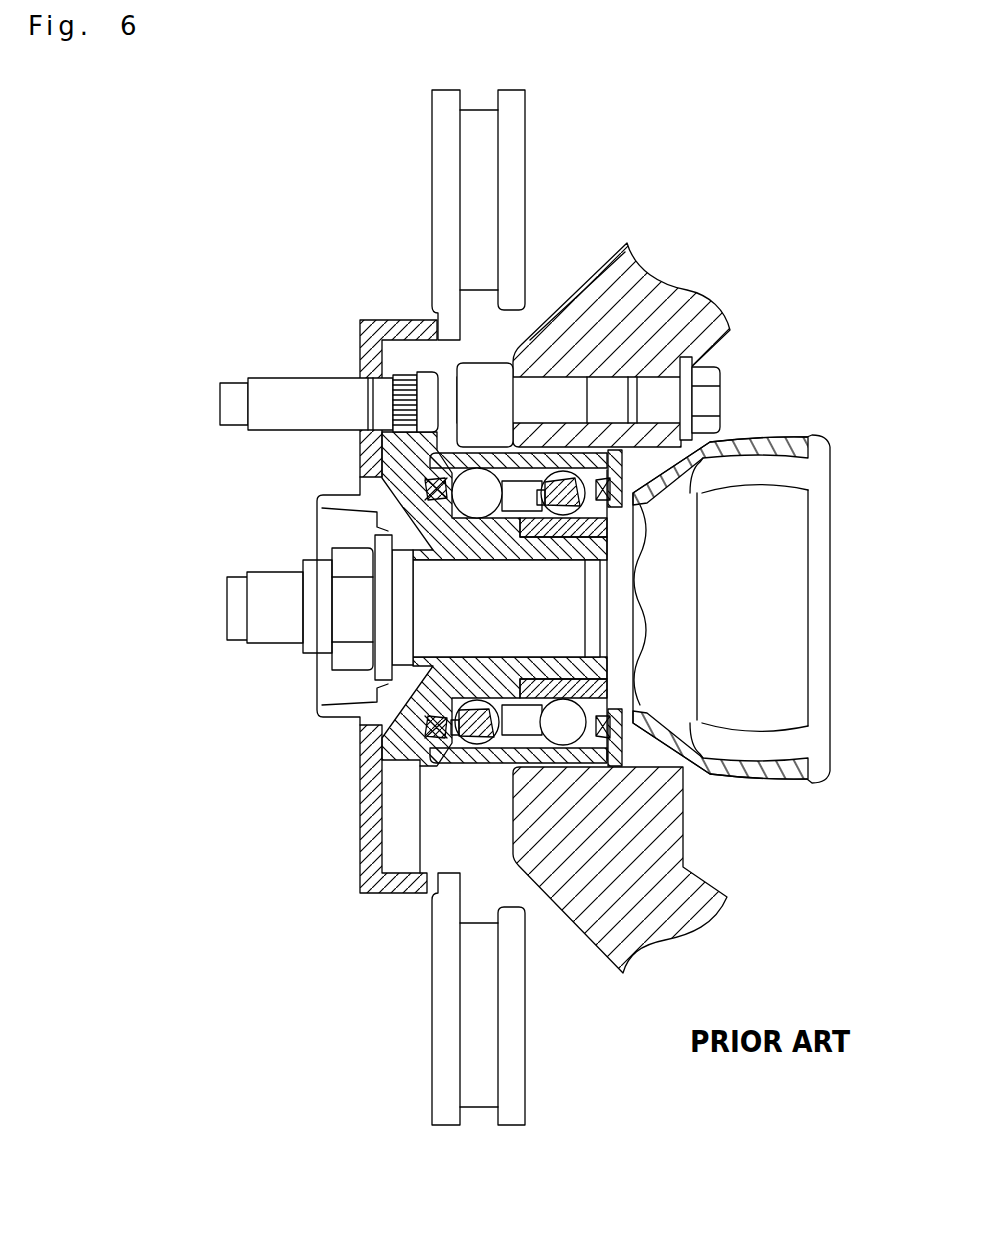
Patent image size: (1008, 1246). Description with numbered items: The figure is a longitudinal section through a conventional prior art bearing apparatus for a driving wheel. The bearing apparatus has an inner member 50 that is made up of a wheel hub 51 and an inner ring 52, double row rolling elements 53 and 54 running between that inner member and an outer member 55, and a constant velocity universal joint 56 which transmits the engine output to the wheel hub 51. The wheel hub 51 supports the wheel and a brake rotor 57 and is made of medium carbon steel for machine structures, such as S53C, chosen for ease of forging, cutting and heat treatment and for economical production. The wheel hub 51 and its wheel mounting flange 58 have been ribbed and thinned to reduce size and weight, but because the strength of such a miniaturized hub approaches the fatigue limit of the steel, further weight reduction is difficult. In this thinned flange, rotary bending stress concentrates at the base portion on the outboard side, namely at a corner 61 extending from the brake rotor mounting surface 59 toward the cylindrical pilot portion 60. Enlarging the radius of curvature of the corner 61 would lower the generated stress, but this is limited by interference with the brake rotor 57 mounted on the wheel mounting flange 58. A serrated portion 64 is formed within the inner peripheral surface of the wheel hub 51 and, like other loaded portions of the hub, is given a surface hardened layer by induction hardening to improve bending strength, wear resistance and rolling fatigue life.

The inner member 50 is at (293, 717).
The wheel hub 51 is at (325, 723).
The inner ring 52 is at (605, 535).
The rolling elements 53 is at (478, 488).
The rolling elements 54 is at (568, 733).
The outer member 55 is at (540, 462).
The constant velocity universal joint 56 is at (765, 813).
The brake rotor 57 is at (443, 170).
The wheel mounting flange 58 is at (400, 368).
The brake rotor mounting surface 59 is at (377, 823).
The cylindrical pilot portion 60 is at (347, 498).
The corner 61 is at (357, 466).
The serrated portion 64 is at (388, 583).